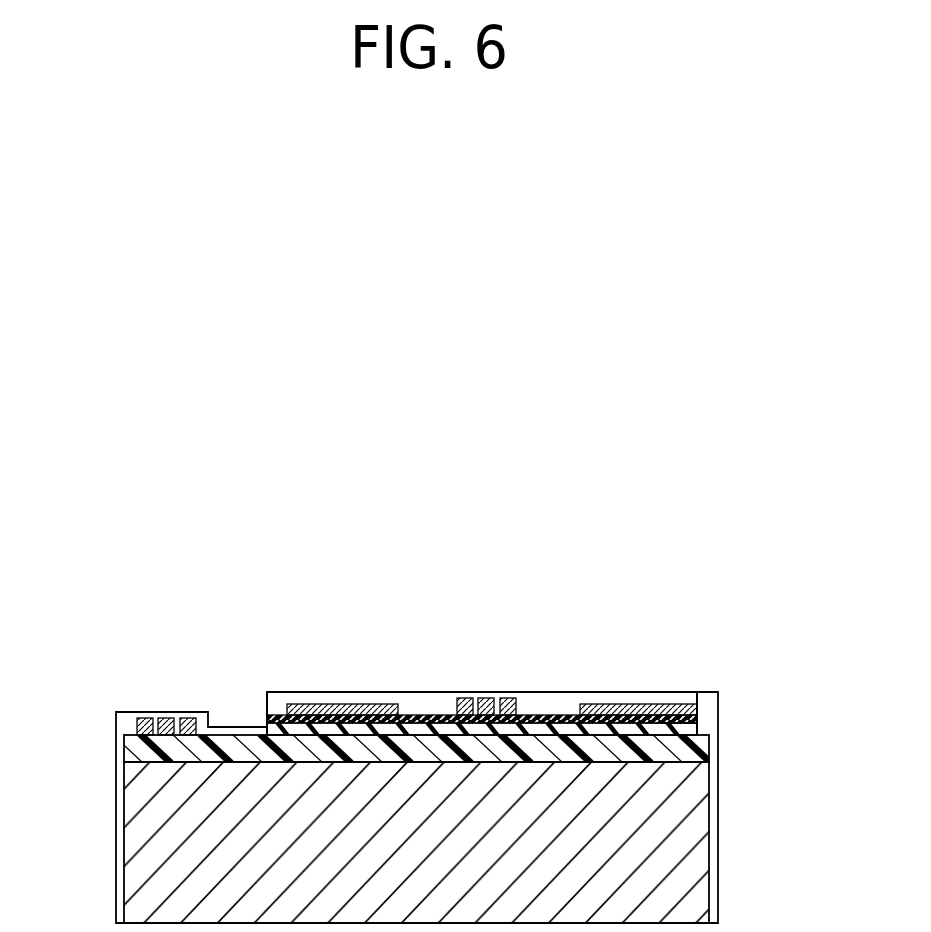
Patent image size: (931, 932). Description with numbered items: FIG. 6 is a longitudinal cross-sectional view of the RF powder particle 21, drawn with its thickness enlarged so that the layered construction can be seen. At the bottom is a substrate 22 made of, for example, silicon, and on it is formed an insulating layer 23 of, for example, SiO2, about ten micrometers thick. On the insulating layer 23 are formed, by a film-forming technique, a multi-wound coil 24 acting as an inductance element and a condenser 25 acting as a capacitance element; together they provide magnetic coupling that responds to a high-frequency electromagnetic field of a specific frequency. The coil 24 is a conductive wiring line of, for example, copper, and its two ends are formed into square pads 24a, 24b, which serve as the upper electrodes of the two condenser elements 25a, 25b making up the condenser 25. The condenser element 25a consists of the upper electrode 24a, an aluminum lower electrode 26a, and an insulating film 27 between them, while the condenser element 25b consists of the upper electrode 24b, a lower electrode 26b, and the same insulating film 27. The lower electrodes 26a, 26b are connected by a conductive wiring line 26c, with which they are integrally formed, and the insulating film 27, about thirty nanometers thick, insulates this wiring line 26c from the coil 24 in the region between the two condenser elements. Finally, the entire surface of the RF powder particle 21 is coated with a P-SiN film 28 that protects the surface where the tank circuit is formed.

The RF powder particle 21 is at (433, 732).
The substrate 22 is at (698, 868).
The insulating layer 23 is at (698, 752).
The multi-wound coil 24 is at (140, 695).
The pad 24a is at (338, 705).
The pad 24b is at (633, 705).
The condenser 25 is at (510, 638).
The condenser element 25a is at (280, 690).
The condenser element 25b is at (705, 695).
The lower electrode 26a is at (263, 720).
The lower electrode 26b is at (705, 727).
The conductive wiring line 26c is at (447, 715).
The insulating film 27 is at (565, 725).
The P-SiN film 28 is at (115, 748).